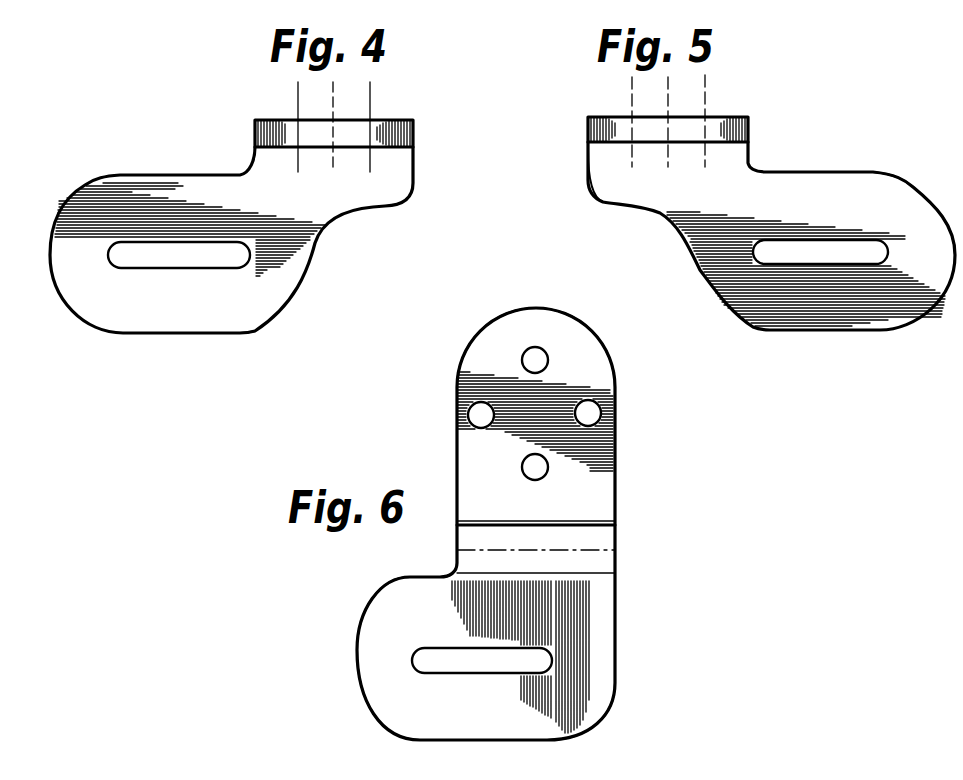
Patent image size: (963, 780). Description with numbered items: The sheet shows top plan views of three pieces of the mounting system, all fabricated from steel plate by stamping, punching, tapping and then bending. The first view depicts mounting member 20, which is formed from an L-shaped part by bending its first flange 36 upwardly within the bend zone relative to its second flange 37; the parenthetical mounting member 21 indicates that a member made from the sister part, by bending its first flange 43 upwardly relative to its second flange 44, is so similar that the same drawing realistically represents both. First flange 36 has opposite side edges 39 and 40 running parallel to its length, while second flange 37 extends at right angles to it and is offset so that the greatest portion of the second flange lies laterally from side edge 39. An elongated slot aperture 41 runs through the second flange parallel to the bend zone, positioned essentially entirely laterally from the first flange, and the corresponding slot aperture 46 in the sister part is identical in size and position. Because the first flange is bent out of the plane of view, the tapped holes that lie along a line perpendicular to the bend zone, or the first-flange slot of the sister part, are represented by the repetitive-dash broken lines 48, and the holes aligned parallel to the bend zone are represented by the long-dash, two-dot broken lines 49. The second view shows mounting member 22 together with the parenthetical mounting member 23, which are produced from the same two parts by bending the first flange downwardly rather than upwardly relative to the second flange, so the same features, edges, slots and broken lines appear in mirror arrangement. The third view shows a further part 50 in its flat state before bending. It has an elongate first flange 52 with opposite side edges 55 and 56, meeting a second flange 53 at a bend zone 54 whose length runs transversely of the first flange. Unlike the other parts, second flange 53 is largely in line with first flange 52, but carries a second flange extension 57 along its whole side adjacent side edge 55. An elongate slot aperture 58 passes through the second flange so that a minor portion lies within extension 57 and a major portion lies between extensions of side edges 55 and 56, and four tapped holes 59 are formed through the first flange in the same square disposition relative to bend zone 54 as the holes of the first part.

In FIG. 4, the mounting member 20 is at (231, 216).
In FIG. 4, the mounting member 21 is at (152, 146).
In FIG. 5, the mounting member 22 is at (771, 223).
In FIG. 5, the mounting member 23 is at (808, 180).
In FIG. 4, the first flange 36 is at (444, 164).
In FIG. 5, the first flange 36 is at (570, 198).
In FIG. 4, the second flange 37 is at (227, 339).
In FIG. 5, the second flange 37 is at (915, 185).
In FIG. 4, the side edge 39 is at (254, 128).
In FIG. 5, the side edge 39 is at (748, 125).
In FIG. 4, the side edge 40 is at (413, 130).
In FIG. 5, the side edge 40 is at (588, 130).
In FIG. 4, the slot aperture 41 is at (155, 314).
In FIG. 5, the slot aperture 41 is at (820, 307).
In FIG. 4, the first flange 43 is at (393, 143).
In FIG. 5, the first flange 43 is at (608, 183).
In FIG. 4, the second flange 44 is at (247, 318).
In FIG. 5, the second flange 44 is at (950, 118).
In FIG. 4, the slot aperture 46 is at (170, 262).
In FIG. 5, the slot aperture 46 is at (822, 253).
In FIG. 4, the broken lines 48 is at (333, 105).
In FIG. 5, the broken lines 48 is at (667, 96).
In FIG. 4, the broken lines 49 is at (297, 103).
In FIG. 5, the broken lines 49 is at (630, 91).
In FIG. 6, the part 50 is at (424, 421).
In FIG. 6, the first flange 52 is at (593, 365).
In FIG. 6, the second flange 53 is at (408, 718).
In FIG. 6, the bend zone 54 is at (589, 572).
In FIG. 6, the side edge 55 is at (455, 500).
In FIG. 6, the side edge 56 is at (613, 454).
In FIG. 6, the second flange extension 57 is at (385, 617).
In FIG. 6, the slot aperture 58 is at (412, 656).
In FIG. 6, the tapped holes 59 is at (540, 357).